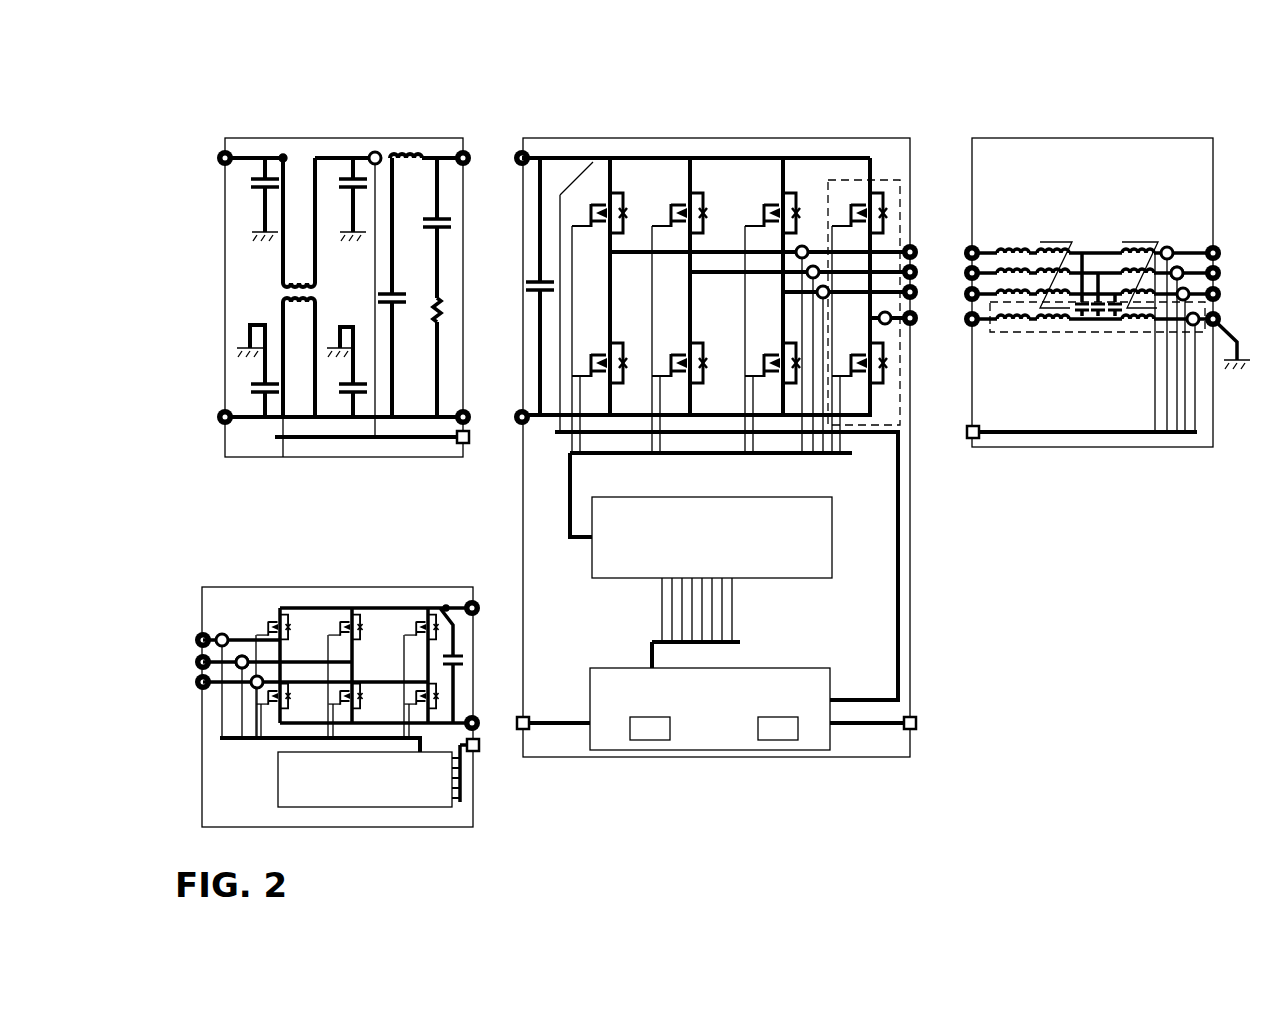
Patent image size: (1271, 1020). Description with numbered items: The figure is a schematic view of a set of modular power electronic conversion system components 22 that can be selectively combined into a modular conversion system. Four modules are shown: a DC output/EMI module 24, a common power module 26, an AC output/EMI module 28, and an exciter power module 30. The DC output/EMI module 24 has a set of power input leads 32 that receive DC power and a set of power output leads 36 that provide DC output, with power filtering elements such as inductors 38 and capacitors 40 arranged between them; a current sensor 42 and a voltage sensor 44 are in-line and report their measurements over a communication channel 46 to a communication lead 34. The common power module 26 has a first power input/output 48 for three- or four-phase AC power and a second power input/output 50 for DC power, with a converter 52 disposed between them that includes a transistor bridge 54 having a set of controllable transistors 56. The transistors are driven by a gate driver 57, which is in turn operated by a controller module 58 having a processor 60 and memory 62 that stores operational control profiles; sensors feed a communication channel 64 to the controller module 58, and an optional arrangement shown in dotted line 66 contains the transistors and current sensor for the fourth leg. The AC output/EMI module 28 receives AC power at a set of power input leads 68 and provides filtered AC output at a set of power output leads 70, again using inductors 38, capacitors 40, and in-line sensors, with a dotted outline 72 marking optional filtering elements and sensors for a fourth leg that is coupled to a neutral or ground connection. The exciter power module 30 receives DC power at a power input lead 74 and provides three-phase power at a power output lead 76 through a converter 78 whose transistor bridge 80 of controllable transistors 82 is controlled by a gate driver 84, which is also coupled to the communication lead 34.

The set of modular power electronic conversion system components 22 is at (1105, 80).
The DC output/EMI module 24 is at (205, 230).
The common power module 26 is at (888, 131).
The AC output/EMI module 28 is at (1226, 150).
The exciter power module 30 is at (410, 834).
The set of power input leads 32 is at (471, 150).
The communication lead 34 is at (470, 441).
The set of power output leads 36 is at (222, 148).
The inductors 38 is at (408, 167).
The capacitors 40 is at (284, 198).
The current sensor 42 is at (377, 151).
The voltage sensor 44 is at (282, 154).
The communication channel 46 is at (350, 438).
The first power input/output 48 is at (917, 242).
The second power input/output 50 is at (519, 150).
The converter 52 is at (596, 151).
The transistor bridge 54 is at (757, 151).
The controllable transistors 56 is at (769, 209).
The gate driver 57 is at (693, 572).
The controller module 58 is at (705, 739).
The processor 60 is at (650, 728).
The memory 62 is at (778, 728).
The communication channel 64 is at (901, 598).
The optional arrangement 66 is at (903, 384).
The set of power input leads 68 is at (962, 234).
The set of power output leads 70 is at (1229, 233).
The optional arrangement 72 is at (1142, 331).
The power input lead 74 is at (482, 598).
The power output lead 76 is at (196, 630).
The converter 78 is at (279, 600).
The transistor bridge 80 is at (390, 600).
The controllable transistors 82 is at (281, 618).
The gate driver 84 is at (355, 801).